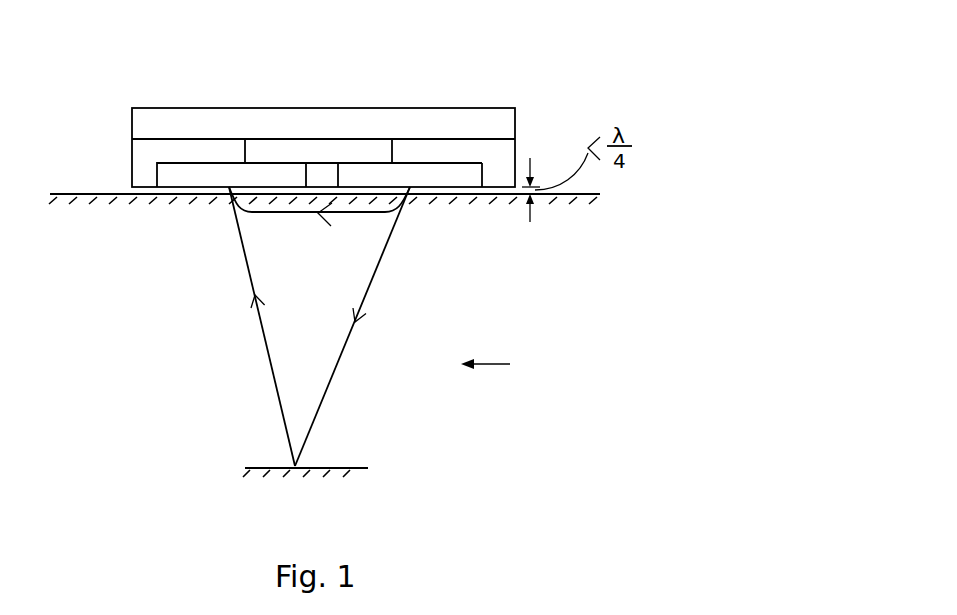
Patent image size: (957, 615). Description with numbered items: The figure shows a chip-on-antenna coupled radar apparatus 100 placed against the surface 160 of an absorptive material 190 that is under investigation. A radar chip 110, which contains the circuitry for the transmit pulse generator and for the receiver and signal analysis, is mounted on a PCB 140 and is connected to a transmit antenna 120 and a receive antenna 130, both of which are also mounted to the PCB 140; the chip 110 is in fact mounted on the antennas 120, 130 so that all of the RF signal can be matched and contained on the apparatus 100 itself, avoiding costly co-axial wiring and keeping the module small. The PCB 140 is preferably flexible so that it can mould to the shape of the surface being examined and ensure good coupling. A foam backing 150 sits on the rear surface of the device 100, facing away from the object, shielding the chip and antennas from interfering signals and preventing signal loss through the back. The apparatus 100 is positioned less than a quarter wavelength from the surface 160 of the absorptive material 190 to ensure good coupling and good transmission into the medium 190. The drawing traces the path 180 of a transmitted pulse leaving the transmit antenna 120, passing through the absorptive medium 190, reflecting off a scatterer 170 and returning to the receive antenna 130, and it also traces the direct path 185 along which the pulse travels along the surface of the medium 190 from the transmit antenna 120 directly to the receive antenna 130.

The coupled radar apparatus 100 is at (604, 110).
The radar chip 110 is at (380, 147).
The transmit antenna 120 is at (463, 180).
The receive antenna 130 is at (185, 176).
The PCB 140 is at (507, 152).
The foam backing 150 is at (210, 120).
The surface 160 is at (590, 194).
The scatterer 170 is at (333, 470).
The path 180 is at (372, 280).
The direct path 185 is at (296, 213).
The absorptive material 190 is at (513, 370).